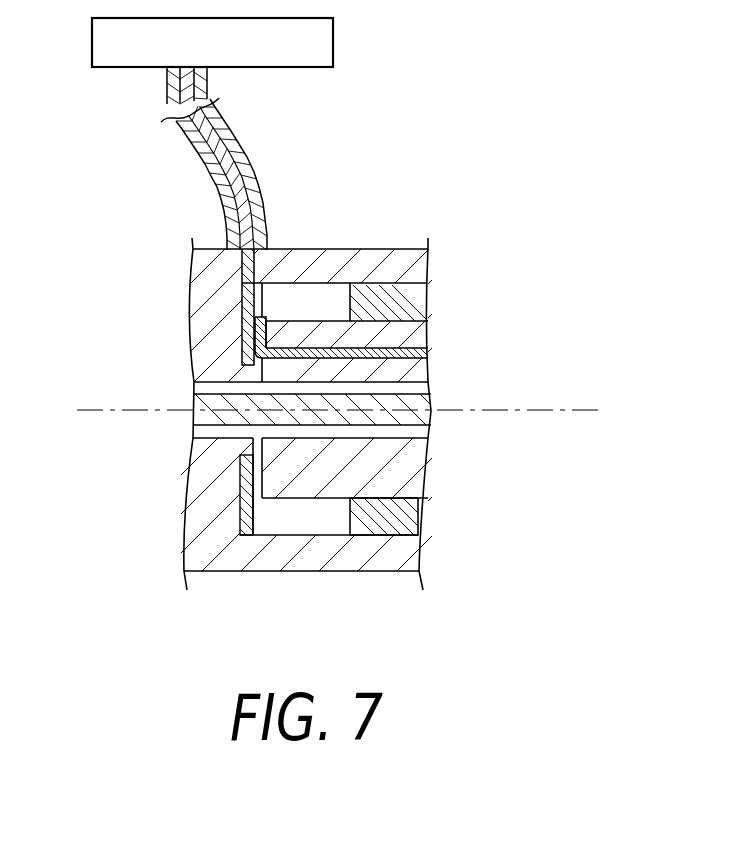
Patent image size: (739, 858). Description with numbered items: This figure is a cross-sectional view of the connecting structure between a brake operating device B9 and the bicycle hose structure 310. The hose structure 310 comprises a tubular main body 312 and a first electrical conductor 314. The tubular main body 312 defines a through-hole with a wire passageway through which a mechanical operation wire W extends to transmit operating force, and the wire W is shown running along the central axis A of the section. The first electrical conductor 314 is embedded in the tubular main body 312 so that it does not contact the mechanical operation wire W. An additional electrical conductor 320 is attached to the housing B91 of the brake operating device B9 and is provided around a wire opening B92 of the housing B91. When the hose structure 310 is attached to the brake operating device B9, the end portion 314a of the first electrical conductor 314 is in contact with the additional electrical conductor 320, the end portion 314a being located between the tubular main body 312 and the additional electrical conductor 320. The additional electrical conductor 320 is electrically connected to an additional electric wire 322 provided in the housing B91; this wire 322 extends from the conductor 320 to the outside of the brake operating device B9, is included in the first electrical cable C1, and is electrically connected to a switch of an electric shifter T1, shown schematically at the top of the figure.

The electric shifter T1 is at (346, 43).
The first electrical cable C1 is at (159, 152).
The additional electric wire 322 is at (247, 264).
The additional electrical conductor 320 is at (248, 317).
The end portion 314a is at (259, 318).
The tubular main body 312 is at (407, 333).
The first electrical conductor 314 is at (386, 278).
The bicycle hose structure 310 is at (416, 366).
The rotational center axis A is at (93, 408).
The mechanical operation wire W is at (407, 418).
The wire opening B92 is at (200, 431).
The housing B91 is at (208, 502).
The brake operating device B9 is at (210, 585).